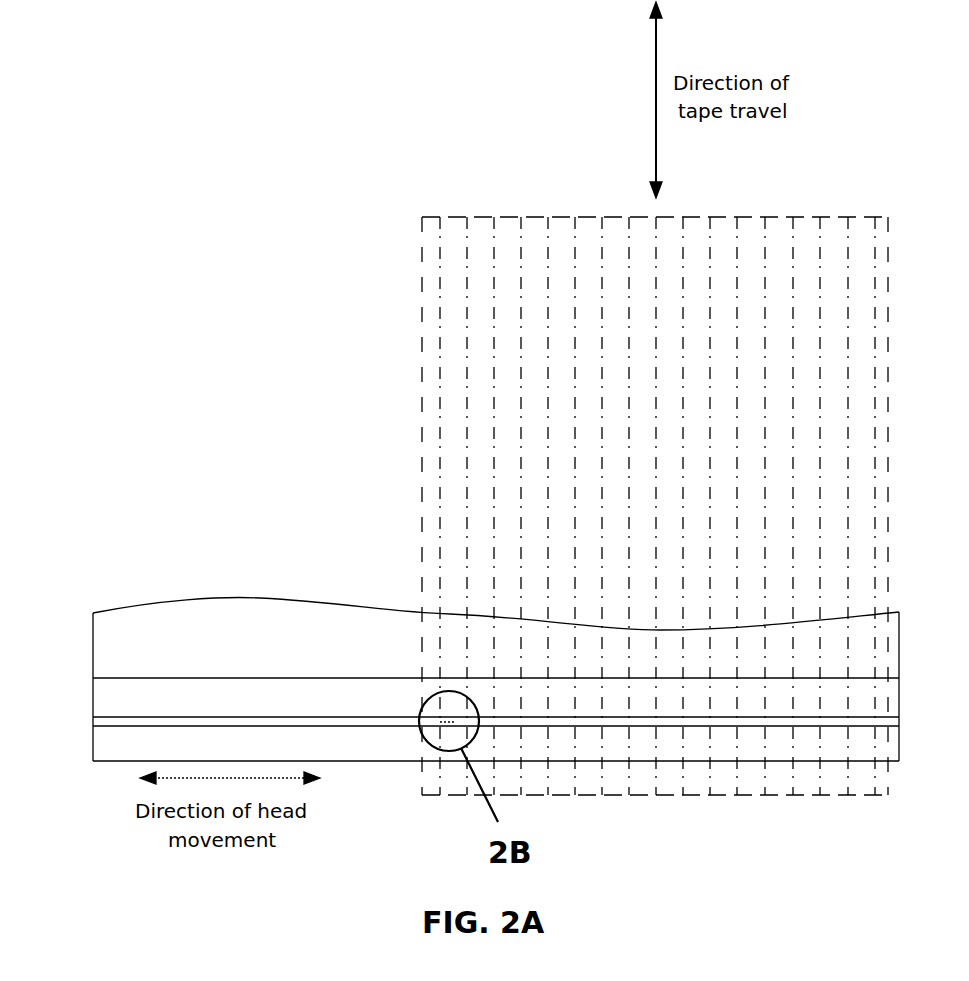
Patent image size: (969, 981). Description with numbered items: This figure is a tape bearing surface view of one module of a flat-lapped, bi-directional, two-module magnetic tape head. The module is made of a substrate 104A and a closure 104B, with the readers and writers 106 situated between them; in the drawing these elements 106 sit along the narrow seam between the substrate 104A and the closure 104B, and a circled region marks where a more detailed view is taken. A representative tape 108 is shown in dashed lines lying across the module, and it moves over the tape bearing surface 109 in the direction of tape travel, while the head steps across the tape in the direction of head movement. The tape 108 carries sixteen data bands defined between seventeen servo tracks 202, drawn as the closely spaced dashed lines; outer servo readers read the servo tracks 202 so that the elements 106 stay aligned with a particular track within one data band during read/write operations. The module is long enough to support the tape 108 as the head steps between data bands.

The tape 108 is at (421, 309).
The servo tracks 202 is at (548, 437).
The substrate 104A is at (250, 598).
The closure 104B is at (92, 745).
The tape bearing surface 109 is at (313, 702).
The readers and writers 106 is at (412, 716).